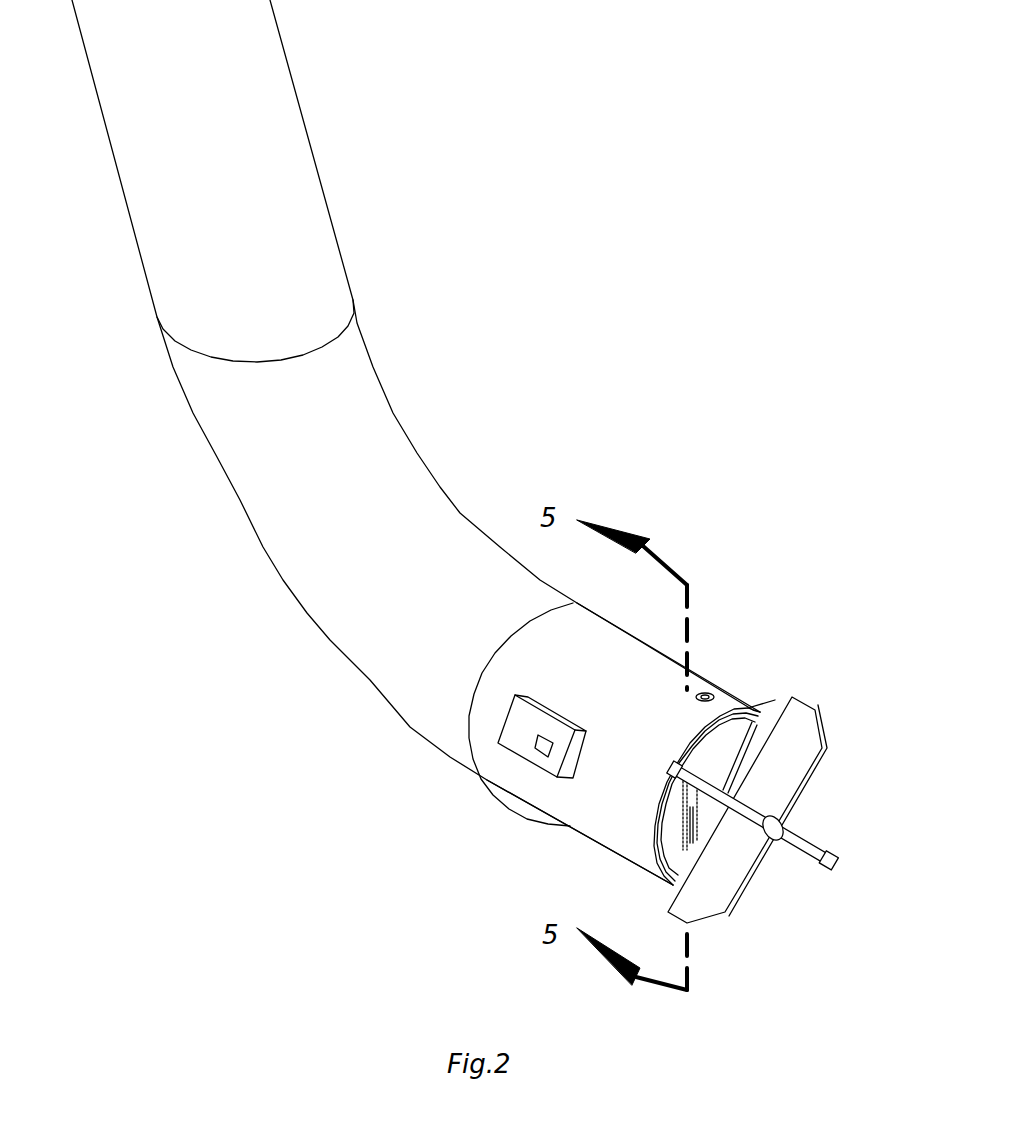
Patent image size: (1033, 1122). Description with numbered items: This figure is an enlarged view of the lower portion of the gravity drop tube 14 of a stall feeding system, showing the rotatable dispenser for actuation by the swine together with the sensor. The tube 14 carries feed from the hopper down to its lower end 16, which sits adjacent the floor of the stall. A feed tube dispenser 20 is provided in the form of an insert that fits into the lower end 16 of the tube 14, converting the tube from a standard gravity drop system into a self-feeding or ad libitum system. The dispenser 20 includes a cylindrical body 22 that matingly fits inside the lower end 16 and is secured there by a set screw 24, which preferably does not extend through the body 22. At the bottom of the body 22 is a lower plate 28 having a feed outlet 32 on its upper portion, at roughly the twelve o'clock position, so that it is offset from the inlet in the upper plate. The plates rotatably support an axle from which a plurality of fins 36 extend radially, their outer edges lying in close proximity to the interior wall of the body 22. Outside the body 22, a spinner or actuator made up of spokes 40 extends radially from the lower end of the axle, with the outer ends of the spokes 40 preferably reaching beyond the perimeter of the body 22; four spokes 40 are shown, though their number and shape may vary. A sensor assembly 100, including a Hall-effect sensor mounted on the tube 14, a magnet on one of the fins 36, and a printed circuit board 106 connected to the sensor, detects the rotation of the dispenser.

The gravity drop tube 14 is at (293, 583).
The lower end of the tube 16 is at (585, 825).
The feed tube dispenser 20 is at (758, 801).
The cylindrical body 22 is at (680, 817).
The set screw 24 is at (697, 694).
The lower plate 28 is at (700, 833).
The feed outlet 32 is at (753, 703).
The fins 36 is at (712, 753).
The spokes 40 is at (672, 768).
The sensor assembly 100 is at (498, 696).
The printed circuit board 106 is at (540, 750).